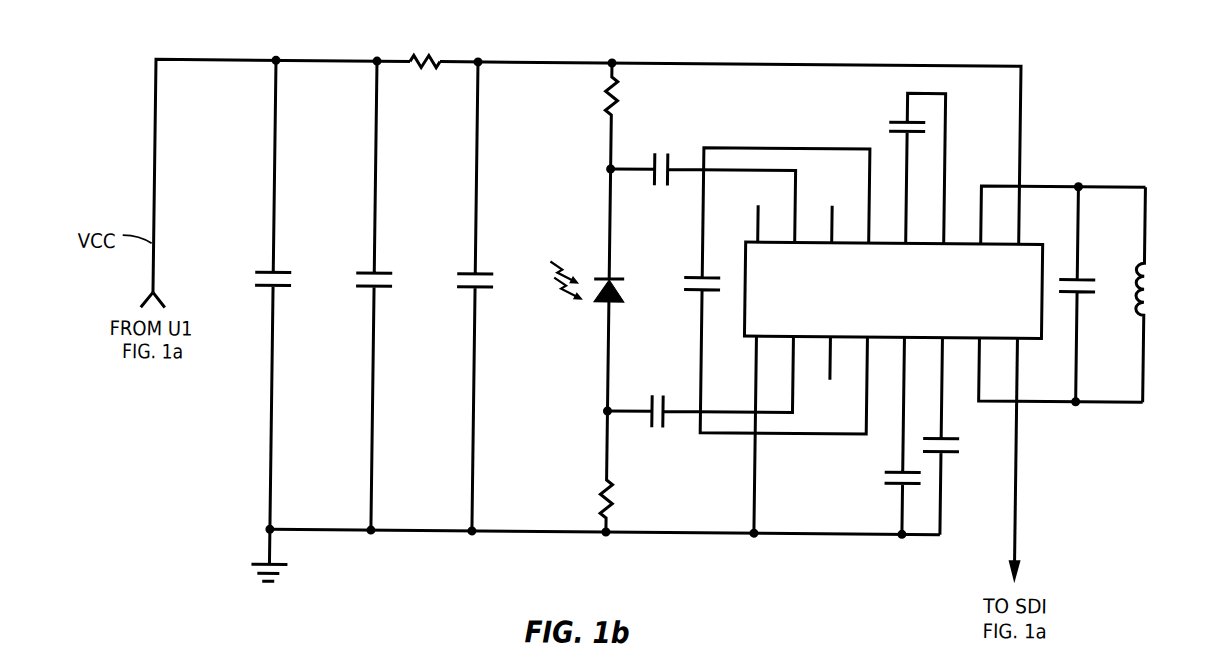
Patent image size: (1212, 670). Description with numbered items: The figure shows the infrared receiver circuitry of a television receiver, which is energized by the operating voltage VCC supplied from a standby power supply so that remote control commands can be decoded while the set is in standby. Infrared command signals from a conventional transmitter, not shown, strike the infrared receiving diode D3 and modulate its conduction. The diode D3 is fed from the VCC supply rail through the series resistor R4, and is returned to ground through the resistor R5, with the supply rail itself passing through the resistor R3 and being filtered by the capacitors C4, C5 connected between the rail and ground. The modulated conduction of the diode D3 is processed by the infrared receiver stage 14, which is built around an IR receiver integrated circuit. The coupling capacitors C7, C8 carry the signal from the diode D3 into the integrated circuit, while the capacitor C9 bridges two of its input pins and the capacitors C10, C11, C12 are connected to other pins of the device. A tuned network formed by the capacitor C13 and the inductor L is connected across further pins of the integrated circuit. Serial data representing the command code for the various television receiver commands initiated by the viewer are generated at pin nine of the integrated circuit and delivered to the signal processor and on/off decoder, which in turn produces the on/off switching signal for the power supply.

The infrared receiver stage 14 is at (1036, 140).
The resistor 22 ohm R3 is at (425, 34).
The resistor 12K R4 is at (590, 116).
The resistor 12K R5 is at (588, 471).
The capacitor 47u 6V C4 is at (250, 295).
The capacitor 100n / 100u 6V C5 is at (405, 296).
The capacitor 10n C7 is at (703, 197).
The capacitor 10n C8 is at (700, 409).
The capacitor 47n C9 is at (757, 290).
The capacitor 10n C10 is at (898, 168).
The capacitor 22n C11 is at (883, 436).
The capacitor 6.8n C12 is at (963, 437).
The capacitor 2.2n C13 is at (1062, 294).
The infrared receiving diode D3 is at (566, 289).
The inductor 8.2mH L is at (1173, 295).